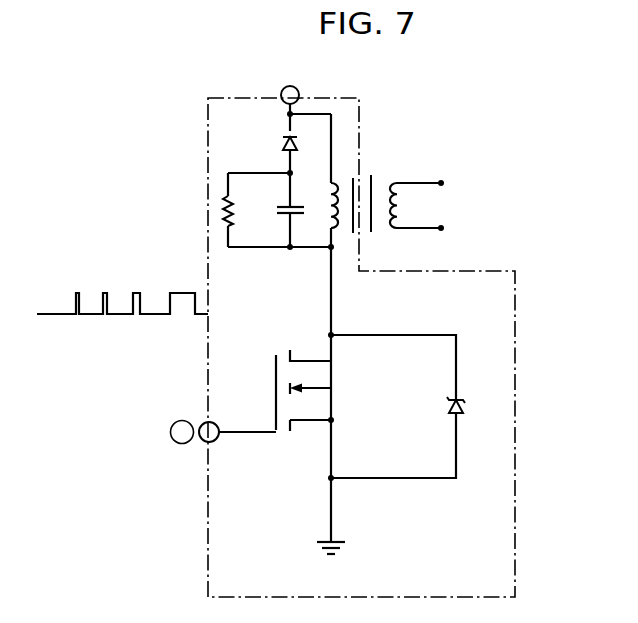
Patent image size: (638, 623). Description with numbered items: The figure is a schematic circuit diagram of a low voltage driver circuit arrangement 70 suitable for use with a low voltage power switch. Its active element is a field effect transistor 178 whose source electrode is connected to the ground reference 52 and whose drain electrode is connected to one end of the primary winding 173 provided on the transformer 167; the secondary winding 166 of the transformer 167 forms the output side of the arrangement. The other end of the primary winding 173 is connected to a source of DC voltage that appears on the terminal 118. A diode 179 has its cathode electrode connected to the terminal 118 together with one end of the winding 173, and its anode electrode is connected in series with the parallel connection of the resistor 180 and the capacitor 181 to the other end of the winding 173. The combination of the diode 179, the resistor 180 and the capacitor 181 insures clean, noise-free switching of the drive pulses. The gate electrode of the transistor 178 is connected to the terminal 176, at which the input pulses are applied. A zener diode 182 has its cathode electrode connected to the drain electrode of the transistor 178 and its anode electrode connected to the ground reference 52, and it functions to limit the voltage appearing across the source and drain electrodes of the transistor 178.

The control circuit 70 is at (518, 303).
The terminal 118 is at (282, 89).
The diode 179 is at (284, 143).
The resistor 180 is at (232, 218).
The capacitor 181 is at (283, 205).
The transformer 167 is at (373, 180).
The primary winding 173 is at (329, 189).
The secondary winding 166 is at (403, 212).
The field effect transistor 178 is at (333, 386).
The zener diode 182 is at (460, 405).
The terminal 176 is at (201, 440).
The ground reference 52 is at (343, 540).